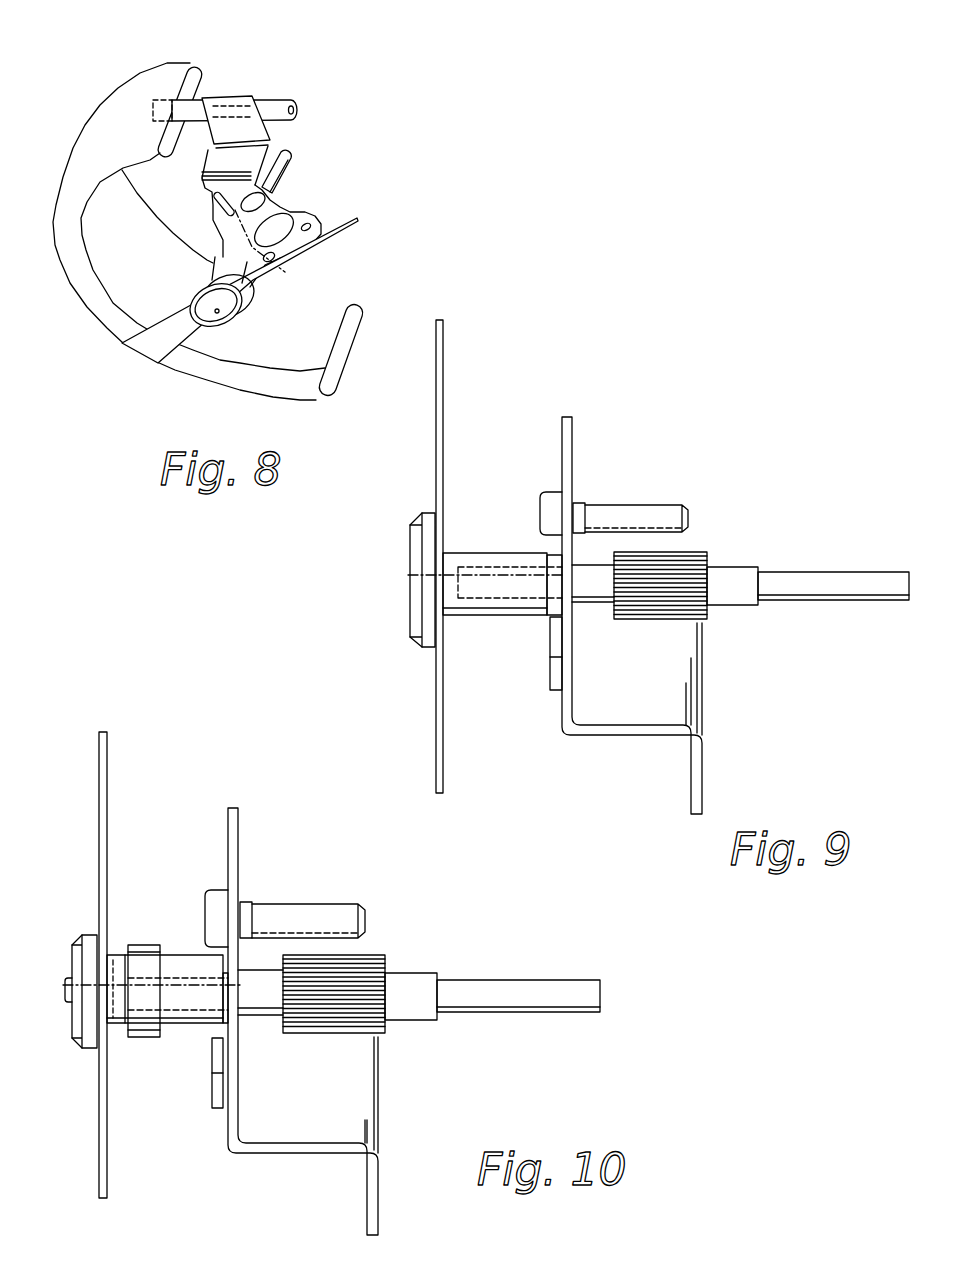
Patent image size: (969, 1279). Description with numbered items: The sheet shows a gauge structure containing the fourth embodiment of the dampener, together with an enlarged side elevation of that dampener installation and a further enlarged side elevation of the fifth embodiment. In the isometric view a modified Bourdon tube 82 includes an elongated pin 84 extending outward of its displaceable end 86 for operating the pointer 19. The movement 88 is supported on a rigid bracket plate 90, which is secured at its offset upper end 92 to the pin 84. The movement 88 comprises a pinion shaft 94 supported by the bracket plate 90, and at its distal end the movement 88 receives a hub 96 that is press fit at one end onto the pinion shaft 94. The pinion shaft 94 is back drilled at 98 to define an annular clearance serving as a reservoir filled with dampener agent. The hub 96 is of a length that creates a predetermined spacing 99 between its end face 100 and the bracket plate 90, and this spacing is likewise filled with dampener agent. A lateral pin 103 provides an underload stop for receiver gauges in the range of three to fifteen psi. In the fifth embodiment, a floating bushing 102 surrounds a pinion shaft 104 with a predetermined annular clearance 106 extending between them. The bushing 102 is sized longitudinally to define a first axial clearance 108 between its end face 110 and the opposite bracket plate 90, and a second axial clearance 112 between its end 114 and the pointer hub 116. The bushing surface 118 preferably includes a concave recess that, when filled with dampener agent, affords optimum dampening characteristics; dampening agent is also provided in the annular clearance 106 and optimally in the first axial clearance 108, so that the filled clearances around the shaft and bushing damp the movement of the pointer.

In FIG. 8, the pointer 19 is at (158, 352).
In FIG. 9, the pointer 19 is at (443, 382).
In FIG. 10, the pointer 19 is at (107, 753).
In FIG. 8, the modified Bourdon tube 82 is at (137, 80).
In FIG. 8, the elongated pin 84 is at (276, 98).
In FIG. 8, the displaceable end 86 is at (197, 72).
In FIG. 8, the movement 88 is at (351, 166).
In FIG. 9, the movement 88 is at (724, 525).
In FIG. 10, the movement 88 is at (409, 944).
In FIG. 8, the rigid bracket plate 90 is at (300, 213).
In FIG. 9, the rigid bracket plate 90 is at (567, 730).
In FIG. 10, the rigid bracket plate 90 is at (238, 822).
In FIG. 8, the offset upper end 92 is at (210, 152).
In FIG. 9, the offset upper end 92 is at (692, 778).
In FIG. 10, the offset upper end 92 is at (371, 1095).
In FIG. 8, the pinion shaft 94 is at (285, 153).
In FIG. 9, the pinion shaft 94 is at (813, 575).
In FIG. 8, the hub 96 is at (207, 262).
In FIG. 9, the hub 96 is at (468, 555).
In FIG. 9, the back drilled portion 98 is at (502, 600).
In FIG. 9, the predetermined spacing 99 is at (552, 617).
In FIG. 9, the end face 100 is at (553, 557).
In FIG. 10, the floating bushing 102 is at (167, 955).
In FIG. 9, the lateral pin 103 is at (623, 507).
In FIG. 10, the lateral pin 103 is at (307, 907).
In FIG. 10, the pinion shaft 104 is at (523, 987).
In FIG. 10, the annular clearance 106 is at (177, 977).
In FIG. 10, the first axial clearance 108 is at (228, 960).
In FIG. 10, the end face 110 is at (230, 1030).
In FIG. 10, the second axial clearance 112 is at (130, 987).
In FIG. 10, the end 114 is at (137, 947).
In FIG. 10, the pointer hub 116 is at (128, 1020).
In FIG. 10, the bushing surface 118 is at (162, 1000).